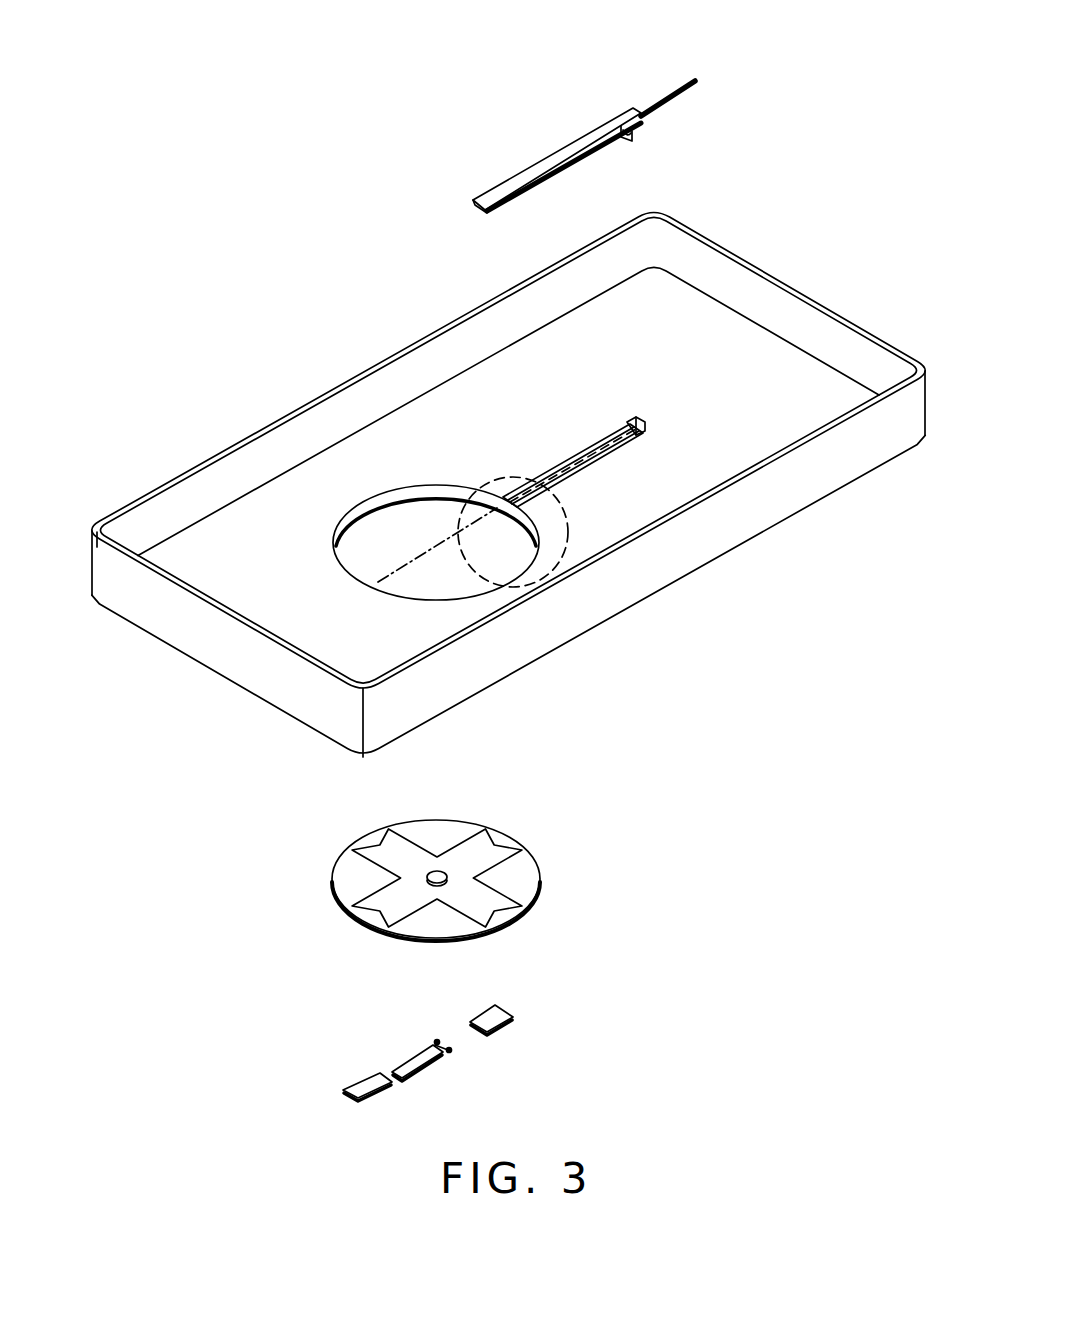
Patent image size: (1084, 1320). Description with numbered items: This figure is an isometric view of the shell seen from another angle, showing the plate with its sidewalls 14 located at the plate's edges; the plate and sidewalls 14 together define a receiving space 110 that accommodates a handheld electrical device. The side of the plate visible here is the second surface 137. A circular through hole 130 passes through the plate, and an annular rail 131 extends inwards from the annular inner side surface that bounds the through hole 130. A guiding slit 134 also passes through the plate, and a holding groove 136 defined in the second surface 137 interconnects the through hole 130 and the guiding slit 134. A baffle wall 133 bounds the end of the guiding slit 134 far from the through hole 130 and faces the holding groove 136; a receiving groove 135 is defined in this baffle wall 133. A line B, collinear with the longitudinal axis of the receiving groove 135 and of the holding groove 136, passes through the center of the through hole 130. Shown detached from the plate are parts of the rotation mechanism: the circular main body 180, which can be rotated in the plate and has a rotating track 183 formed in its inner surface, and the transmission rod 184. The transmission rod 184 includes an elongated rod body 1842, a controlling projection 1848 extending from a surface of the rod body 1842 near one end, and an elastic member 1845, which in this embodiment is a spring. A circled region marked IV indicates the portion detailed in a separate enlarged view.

The receiving space 110 is at (508, 484).
The sidewalls 14 is at (252, 658).
The second surface 137 is at (261, 513).
The through hole 130 is at (397, 454).
The annular rail 131 is at (377, 492).
The holding groove 136 is at (641, 408).
The baffle wall 133 is at (633, 423).
The guiding slit 134 is at (643, 432).
The receiving groove 135 is at (640, 430).
The transmission rod 184 is at (605, 127).
The rod body 1842 is at (505, 187).
The elastic member 1845 is at (690, 92).
The controlling projection 1848 is at (668, 145).
The main body 180 is at (475, 873).
The rotating track 183 is at (487, 832).
The section indicator circle IV is at (568, 525).
The line B is at (437, 545).